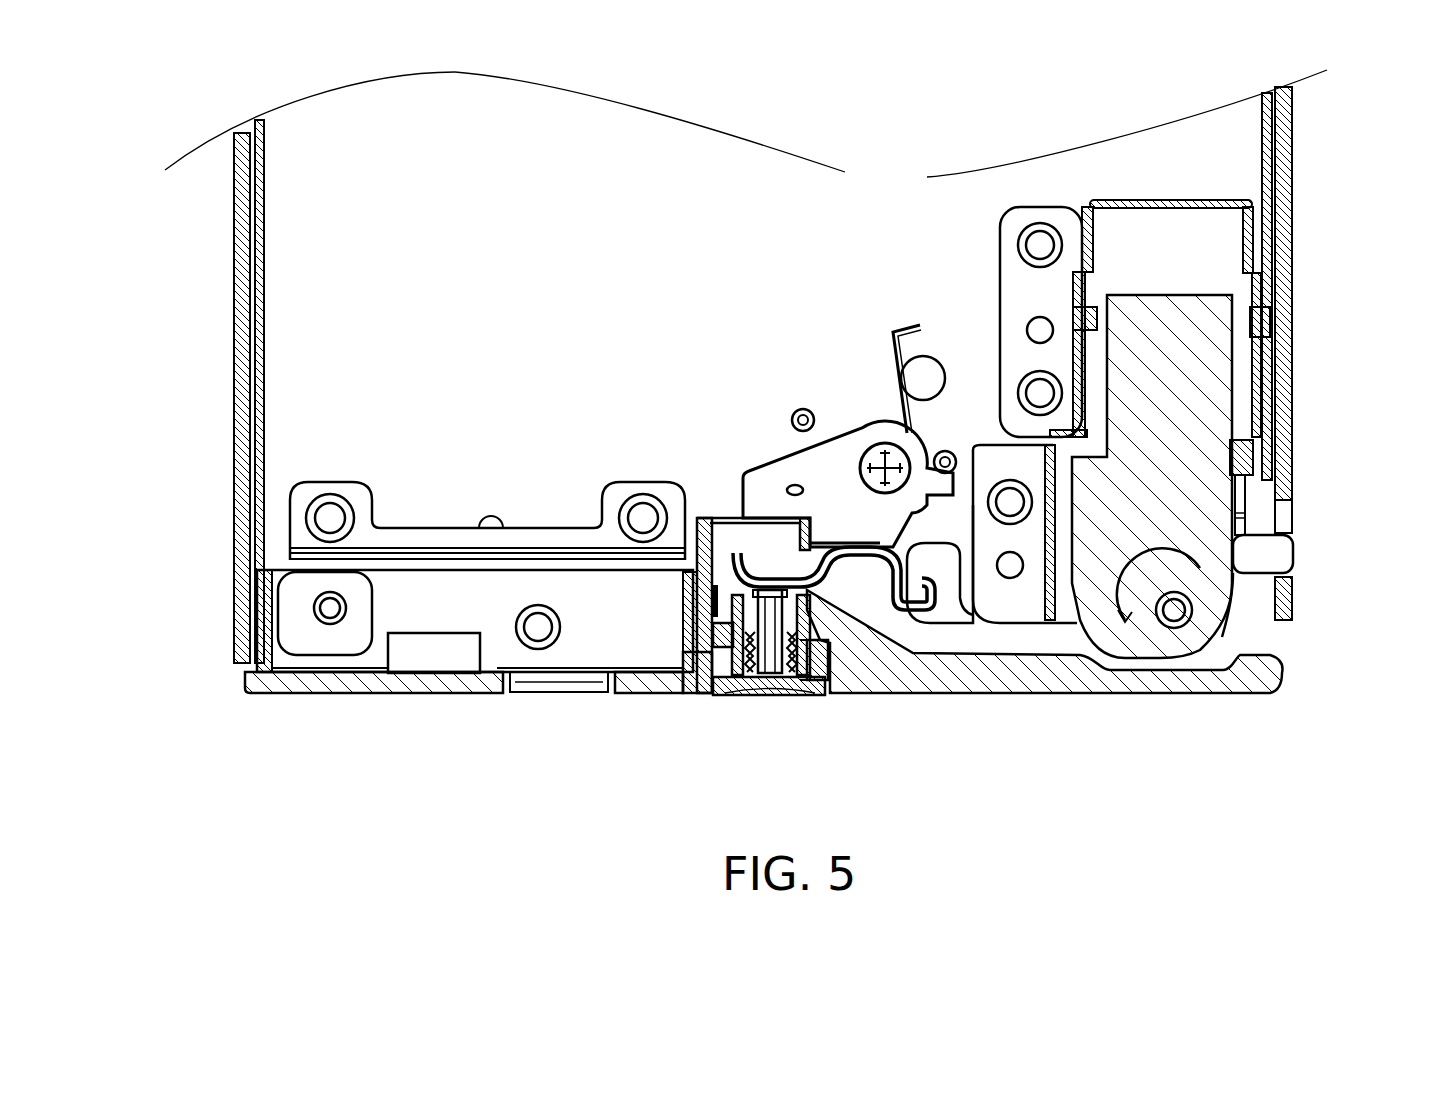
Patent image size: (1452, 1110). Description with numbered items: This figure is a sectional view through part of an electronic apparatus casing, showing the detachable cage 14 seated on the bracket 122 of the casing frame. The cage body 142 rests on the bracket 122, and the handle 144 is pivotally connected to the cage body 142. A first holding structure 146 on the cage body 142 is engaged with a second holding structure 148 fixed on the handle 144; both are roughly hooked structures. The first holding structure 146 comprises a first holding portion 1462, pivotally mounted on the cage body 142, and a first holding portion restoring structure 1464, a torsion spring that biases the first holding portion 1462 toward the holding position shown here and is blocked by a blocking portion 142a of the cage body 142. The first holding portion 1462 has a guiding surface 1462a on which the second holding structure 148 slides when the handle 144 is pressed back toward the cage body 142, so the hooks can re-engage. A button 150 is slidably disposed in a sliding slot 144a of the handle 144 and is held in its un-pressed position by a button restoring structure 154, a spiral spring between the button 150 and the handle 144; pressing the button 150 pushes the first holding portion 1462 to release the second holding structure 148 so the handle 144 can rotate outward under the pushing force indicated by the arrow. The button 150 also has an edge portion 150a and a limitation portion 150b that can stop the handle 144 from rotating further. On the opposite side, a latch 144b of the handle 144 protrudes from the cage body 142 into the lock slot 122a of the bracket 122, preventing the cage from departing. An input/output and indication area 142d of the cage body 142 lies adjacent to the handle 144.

The detachable cage 14 is at (328, 727).
The bracket 122 is at (233, 338).
The lock slot 122a is at (1292, 515).
The cage body 142 is at (712, 187).
The blocking portion 142a is at (950, 452).
The input/output and indication area 142d is at (556, 693).
The handle 144 is at (1063, 690).
The sliding slot 144a is at (693, 647).
The latch 144b is at (1293, 556).
The first holding structure 146 is at (846, 503).
The first holding portion 1462 is at (845, 505).
The guiding surface 1462a is at (915, 604).
The first holding portion restoring structure 1464 is at (912, 323).
The second holding structure 148 is at (932, 566).
The button 150 is at (743, 697).
The edge portion 150a is at (808, 660).
The limitation portion 150b is at (848, 696).
The button restoring structure 154 is at (790, 697).